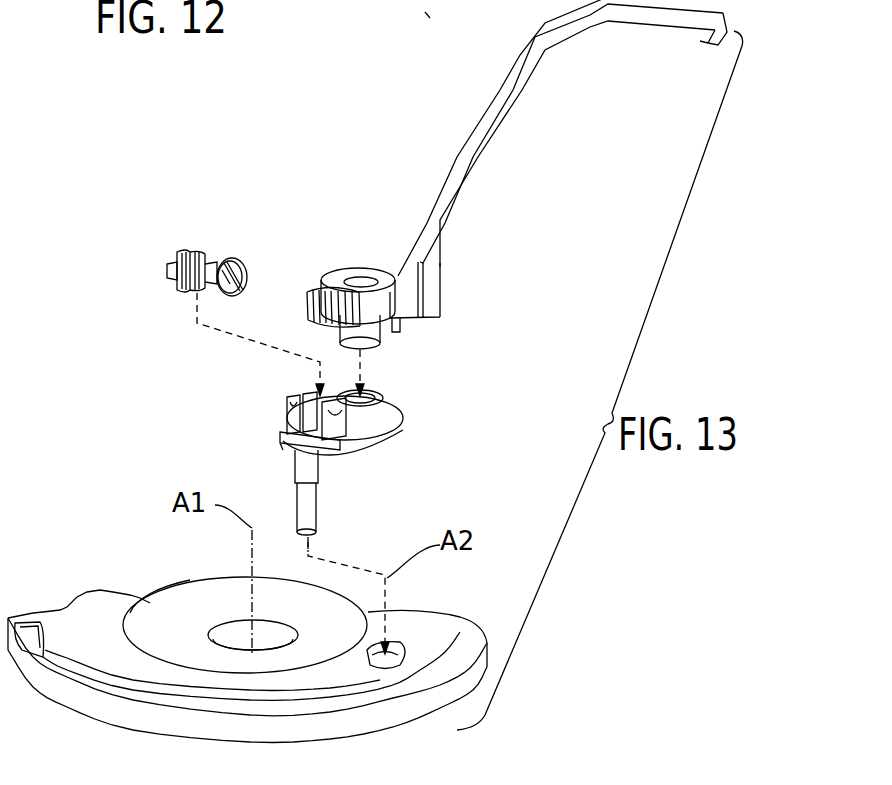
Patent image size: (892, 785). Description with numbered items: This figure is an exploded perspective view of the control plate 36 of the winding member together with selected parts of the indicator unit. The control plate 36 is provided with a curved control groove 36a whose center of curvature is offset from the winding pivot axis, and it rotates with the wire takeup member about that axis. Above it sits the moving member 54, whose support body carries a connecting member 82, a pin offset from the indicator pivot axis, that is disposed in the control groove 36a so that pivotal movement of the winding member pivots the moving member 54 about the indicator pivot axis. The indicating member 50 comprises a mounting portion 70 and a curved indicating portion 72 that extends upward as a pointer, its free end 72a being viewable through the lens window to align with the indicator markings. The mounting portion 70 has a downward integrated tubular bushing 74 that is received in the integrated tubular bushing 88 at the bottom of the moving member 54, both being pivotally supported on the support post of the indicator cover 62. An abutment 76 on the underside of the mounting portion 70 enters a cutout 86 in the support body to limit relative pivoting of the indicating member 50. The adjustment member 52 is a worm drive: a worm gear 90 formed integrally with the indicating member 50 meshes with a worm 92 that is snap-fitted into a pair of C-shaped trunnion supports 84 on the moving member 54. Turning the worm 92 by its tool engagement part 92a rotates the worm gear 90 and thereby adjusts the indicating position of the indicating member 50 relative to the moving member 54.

The control plate 36 is at (264, 644).
The control groove 36a is at (23, 627).
The indicating member 50 is at (503, 197).
The adjustment member 52 is at (239, 246).
The moving member 54 is at (331, 465).
The indicator cover 62 is at (421, 9).
The mounting portion 70 is at (337, 266).
The indicating portion 72 is at (558, 159).
The free end 72a is at (717, 45).
The integrated tubular bushing 74 is at (382, 340).
The abutment 76 is at (400, 328).
The connecting member 82 is at (320, 503).
The trunnion supports 84 is at (288, 442).
The cutout 86 is at (400, 407).
The integrated tubular bushing 88 is at (355, 443).
The worm gear 90 is at (308, 300).
The worm 92 is at (235, 263).
The tool engagement part 92a is at (246, 283).